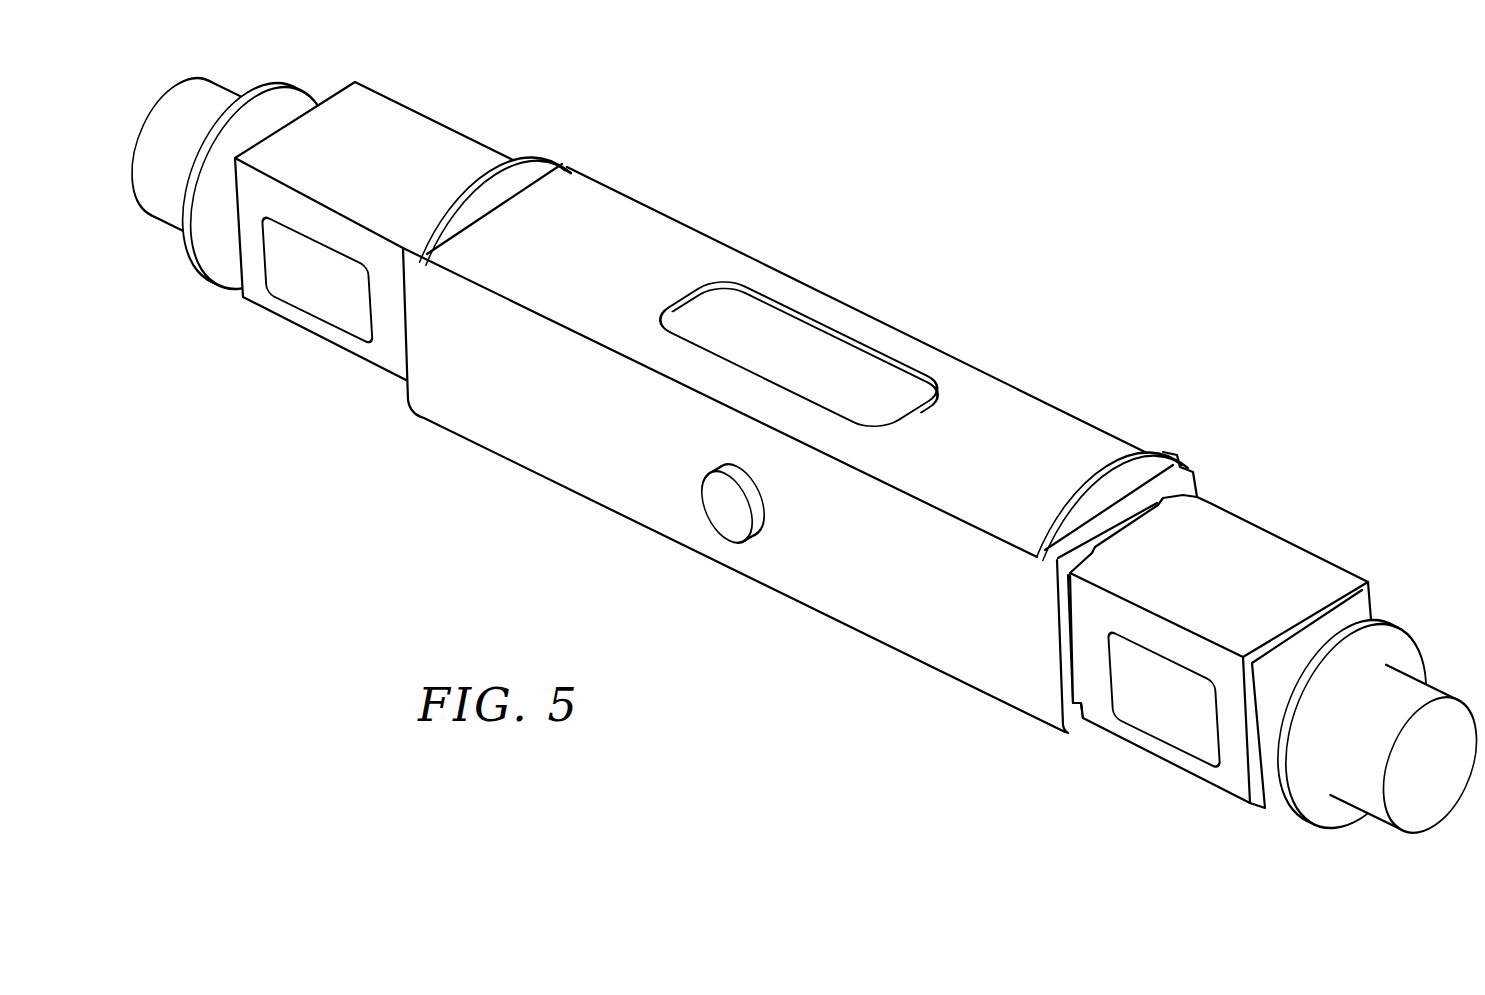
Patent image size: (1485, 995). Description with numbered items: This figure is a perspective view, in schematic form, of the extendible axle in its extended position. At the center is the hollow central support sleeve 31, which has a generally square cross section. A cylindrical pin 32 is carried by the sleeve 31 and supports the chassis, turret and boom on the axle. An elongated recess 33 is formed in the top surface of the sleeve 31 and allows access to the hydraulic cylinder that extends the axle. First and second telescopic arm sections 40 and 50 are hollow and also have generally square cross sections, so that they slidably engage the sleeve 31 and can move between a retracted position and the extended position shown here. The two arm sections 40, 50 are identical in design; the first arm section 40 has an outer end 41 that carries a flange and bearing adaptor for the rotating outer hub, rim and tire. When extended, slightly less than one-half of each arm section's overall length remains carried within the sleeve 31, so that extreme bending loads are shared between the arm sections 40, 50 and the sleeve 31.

The second telescopic arm section 50 is at (433, 103).
The hollow central support sleeve 31 is at (1062, 437).
The cylindrical pin 32 is at (717, 522).
The elongated recess 33 is at (795, 316).
The first telescopic arm section 40 is at (1275, 517).
The outer end 41 is at (1335, 590).